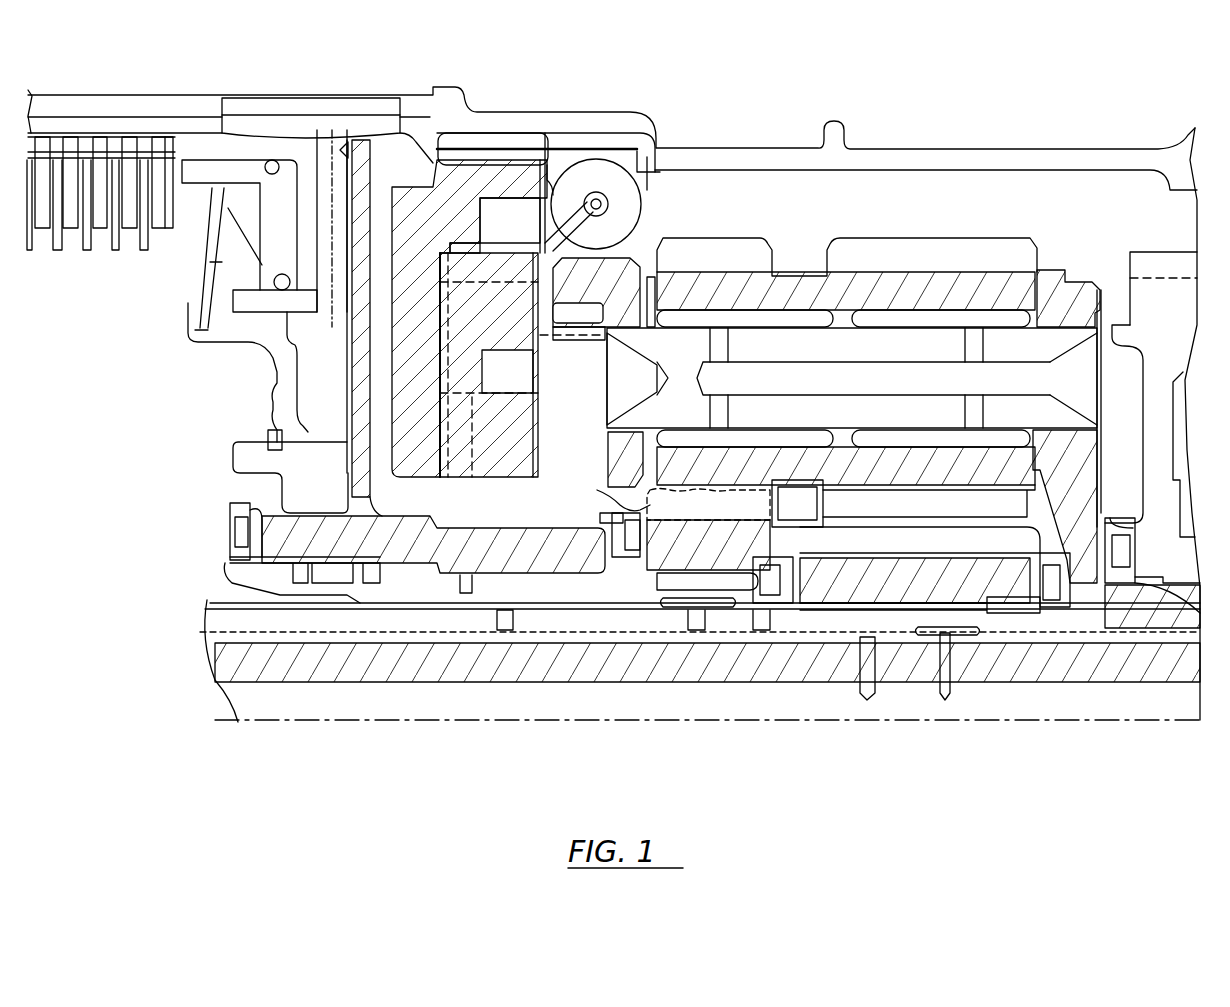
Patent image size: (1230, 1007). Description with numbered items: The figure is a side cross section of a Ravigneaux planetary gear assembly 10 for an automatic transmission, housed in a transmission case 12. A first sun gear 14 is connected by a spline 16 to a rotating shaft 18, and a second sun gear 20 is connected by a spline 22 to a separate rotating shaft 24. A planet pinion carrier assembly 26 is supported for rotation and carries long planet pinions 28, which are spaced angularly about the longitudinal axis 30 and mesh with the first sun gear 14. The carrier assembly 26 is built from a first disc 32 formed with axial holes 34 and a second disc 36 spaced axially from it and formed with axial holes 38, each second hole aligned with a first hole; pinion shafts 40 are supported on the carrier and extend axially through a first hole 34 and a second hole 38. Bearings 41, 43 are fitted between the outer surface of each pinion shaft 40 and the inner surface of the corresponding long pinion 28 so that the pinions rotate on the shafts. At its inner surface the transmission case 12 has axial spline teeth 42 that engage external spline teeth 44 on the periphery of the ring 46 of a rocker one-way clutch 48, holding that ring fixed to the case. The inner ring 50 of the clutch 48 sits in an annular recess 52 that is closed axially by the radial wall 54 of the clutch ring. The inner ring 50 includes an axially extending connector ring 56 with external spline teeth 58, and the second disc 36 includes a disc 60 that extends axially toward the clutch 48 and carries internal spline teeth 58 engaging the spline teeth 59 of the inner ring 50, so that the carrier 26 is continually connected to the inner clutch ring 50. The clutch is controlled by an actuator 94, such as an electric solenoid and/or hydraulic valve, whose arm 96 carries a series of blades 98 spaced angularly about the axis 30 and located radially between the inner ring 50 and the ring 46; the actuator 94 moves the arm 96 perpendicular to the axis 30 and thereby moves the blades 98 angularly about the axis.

The planetary gear assembly 10 is at (958, 210).
The transmission case 12 is at (932, 157).
The first sun gear 14 is at (726, 559).
The spline 16 is at (703, 578).
The rotating shaft 18 is at (586, 597).
The second sun gear 20 is at (937, 597).
The spline 22 is at (880, 610).
The rotating shaft 24 is at (566, 634).
The planet pinion carrier assembly 26 is at (750, 210).
The long planet pinions 28 is at (990, 278).
The longitudinal axis 30 is at (665, 722).
The first disc 32 is at (1052, 284).
The axial holes 34 is at (1063, 428).
The second disc 36 is at (622, 455).
The axial holes 38 is at (630, 425).
The pinion shafts 40 is at (1067, 340).
The bearing 41 is at (770, 317).
The axial spline teeth 42 is at (612, 140).
The bearing 43 is at (887, 318).
The external spline teeth 44 is at (520, 142).
The ring 46 is at (469, 261).
The rocker one-way clutch 48 is at (437, 490).
The inner ring 50 is at (508, 330).
The annular recess 52 is at (445, 300).
The radial wall 54 is at (428, 340).
The connector ring 56 is at (580, 308).
The spline teeth 58 is at (595, 350).
The spline teeth 59 is at (553, 305).
The disc 60 is at (627, 285).
The actuator 94 is at (630, 195).
The arm 96 is at (500, 248).
The blades 98 is at (462, 243).